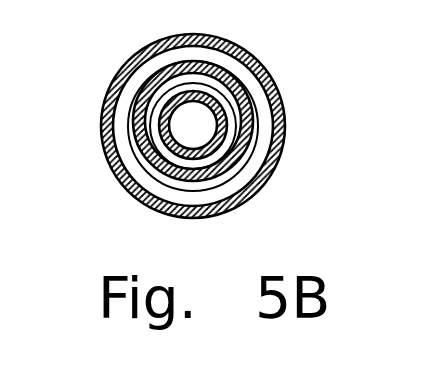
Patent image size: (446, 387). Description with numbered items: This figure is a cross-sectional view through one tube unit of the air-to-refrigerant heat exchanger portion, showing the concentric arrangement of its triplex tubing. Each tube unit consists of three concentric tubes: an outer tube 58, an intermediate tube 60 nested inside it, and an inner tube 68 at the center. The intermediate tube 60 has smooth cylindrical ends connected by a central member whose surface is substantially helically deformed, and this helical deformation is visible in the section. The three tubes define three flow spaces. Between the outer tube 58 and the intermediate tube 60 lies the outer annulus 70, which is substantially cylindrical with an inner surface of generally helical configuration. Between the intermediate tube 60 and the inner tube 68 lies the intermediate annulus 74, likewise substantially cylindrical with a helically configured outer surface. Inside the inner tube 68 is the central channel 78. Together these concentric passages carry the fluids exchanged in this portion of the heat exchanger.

The outer tube 58 is at (250, 55).
The intermediate tube 60 is at (243, 88).
The inner tube 68 is at (217, 117).
The outer annulus 70 is at (142, 181).
The intermediate annulus 74 is at (153, 137).
The central channel 78 is at (197, 125).